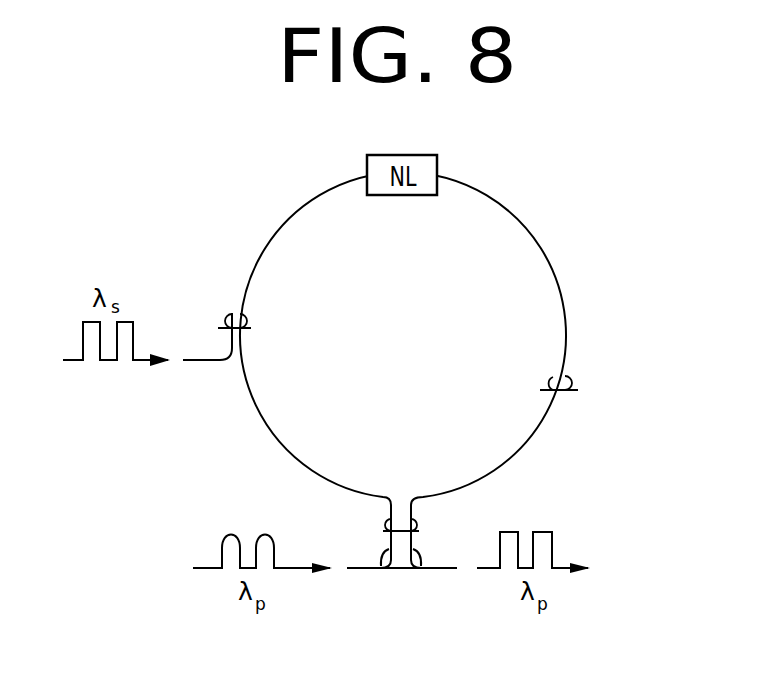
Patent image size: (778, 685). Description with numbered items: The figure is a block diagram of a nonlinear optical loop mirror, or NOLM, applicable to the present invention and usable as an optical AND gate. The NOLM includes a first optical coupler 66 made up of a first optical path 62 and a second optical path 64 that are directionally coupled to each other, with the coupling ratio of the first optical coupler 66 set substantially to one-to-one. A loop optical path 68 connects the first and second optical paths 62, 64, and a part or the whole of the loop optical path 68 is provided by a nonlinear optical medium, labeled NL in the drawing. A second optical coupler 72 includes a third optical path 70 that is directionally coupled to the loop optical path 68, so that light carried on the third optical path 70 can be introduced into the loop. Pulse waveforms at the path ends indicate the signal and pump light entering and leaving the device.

The first optical path 62 is at (383, 568).
The second optical path 64 is at (415, 568).
The first optical coupler 66 is at (420, 522).
The loop optical path 68 is at (580, 383).
The third optical path 70 is at (228, 347).
The second optical coupler 72 is at (253, 318).